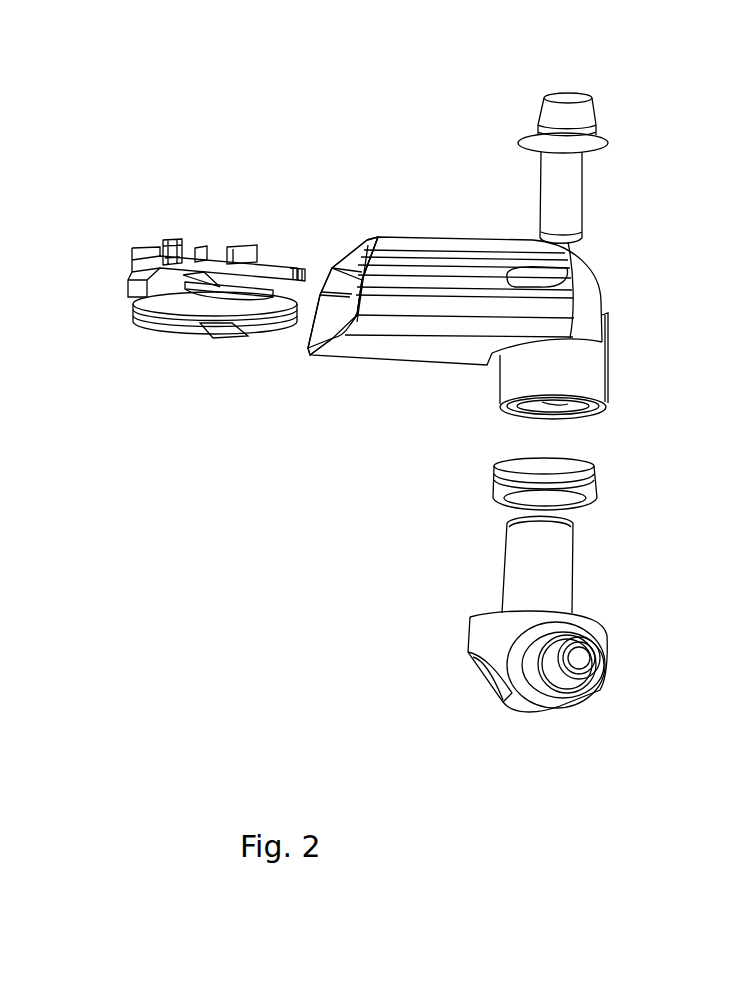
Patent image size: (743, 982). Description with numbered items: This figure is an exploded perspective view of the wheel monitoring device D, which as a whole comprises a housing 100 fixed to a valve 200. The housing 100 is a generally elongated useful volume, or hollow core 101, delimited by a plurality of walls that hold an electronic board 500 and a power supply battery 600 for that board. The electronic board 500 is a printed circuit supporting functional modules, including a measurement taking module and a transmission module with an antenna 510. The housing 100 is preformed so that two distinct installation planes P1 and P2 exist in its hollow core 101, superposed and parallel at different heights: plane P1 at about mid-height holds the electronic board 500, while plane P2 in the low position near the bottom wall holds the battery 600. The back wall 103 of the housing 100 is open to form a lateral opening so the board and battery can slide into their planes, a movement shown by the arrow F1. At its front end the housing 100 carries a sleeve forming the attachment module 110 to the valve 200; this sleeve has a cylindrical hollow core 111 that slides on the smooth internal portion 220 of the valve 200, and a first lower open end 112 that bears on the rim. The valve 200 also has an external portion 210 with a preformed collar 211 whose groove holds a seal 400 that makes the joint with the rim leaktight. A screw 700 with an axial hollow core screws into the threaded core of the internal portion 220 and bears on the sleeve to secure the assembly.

The housing 100 is at (590, 290).
The hollow core 101 is at (356, 262).
The back wall 103 is at (355, 297).
The attachment module 110 is at (602, 370).
The cylindrical hollow core 111 is at (585, 417).
The first lower open end 112 is at (602, 398).
The valve 200 is at (580, 696).
The external portion 210 is at (528, 710).
The collar 211 is at (598, 620).
The internal portion 220 is at (570, 580).
The seal 400 is at (597, 495).
The electronic board 500 is at (223, 263).
The antenna 510 is at (168, 250).
The power supply battery 600 is at (158, 326).
The screw 700 is at (578, 175).
The first installation plane P1 is at (332, 298).
The second installation plane P2 is at (323, 343).
The wheel monitoring device D is at (453, 210).
The arrow F1 is at (240, 399).